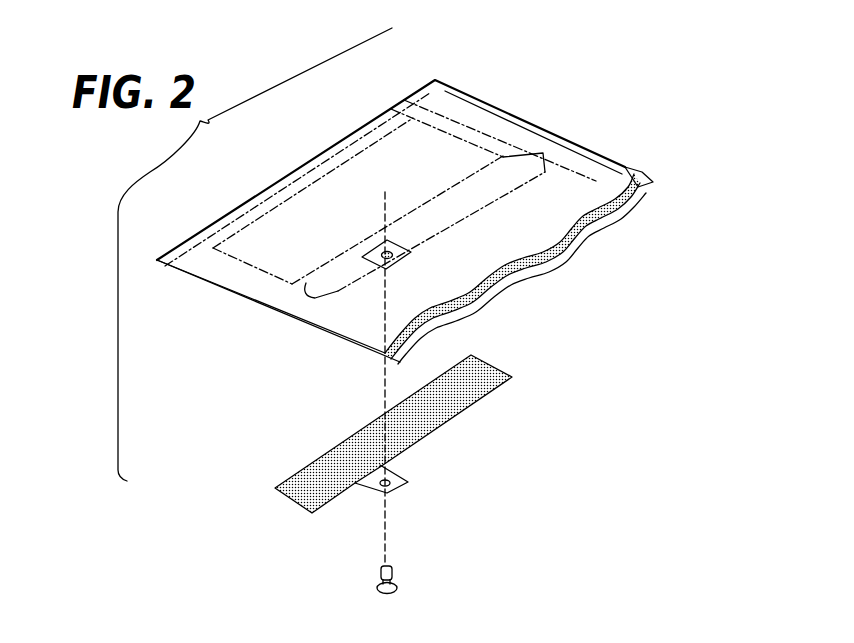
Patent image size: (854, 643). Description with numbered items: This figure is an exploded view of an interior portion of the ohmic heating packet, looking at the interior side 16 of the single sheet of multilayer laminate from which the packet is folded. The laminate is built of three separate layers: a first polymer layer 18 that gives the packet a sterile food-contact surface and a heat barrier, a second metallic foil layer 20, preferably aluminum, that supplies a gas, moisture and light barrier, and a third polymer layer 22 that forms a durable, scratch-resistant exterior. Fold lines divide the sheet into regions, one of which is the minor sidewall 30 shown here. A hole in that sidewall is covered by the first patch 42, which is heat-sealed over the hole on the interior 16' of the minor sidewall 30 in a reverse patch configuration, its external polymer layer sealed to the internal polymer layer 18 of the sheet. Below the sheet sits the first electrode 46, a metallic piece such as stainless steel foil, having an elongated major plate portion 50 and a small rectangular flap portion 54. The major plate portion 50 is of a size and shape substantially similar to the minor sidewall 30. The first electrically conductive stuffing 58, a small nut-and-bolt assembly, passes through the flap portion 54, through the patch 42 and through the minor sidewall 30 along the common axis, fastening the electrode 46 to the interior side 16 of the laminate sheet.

The interior side 16 is at (391, 196).
The interior 16' is at (512, 266).
The first polymer layer 18 is at (608, 172).
The second metallic foil layer 20 is at (653, 184).
The third polymer layer 22 is at (645, 195).
The minor sidewall 30 is at (493, 187).
The first patch 42 is at (400, 258).
The first electrode 46 is at (482, 398).
The major plate portion 50 is at (313, 487).
The flap portion 54 is at (398, 487).
The first electrically conductive stuffing 58 is at (377, 573).